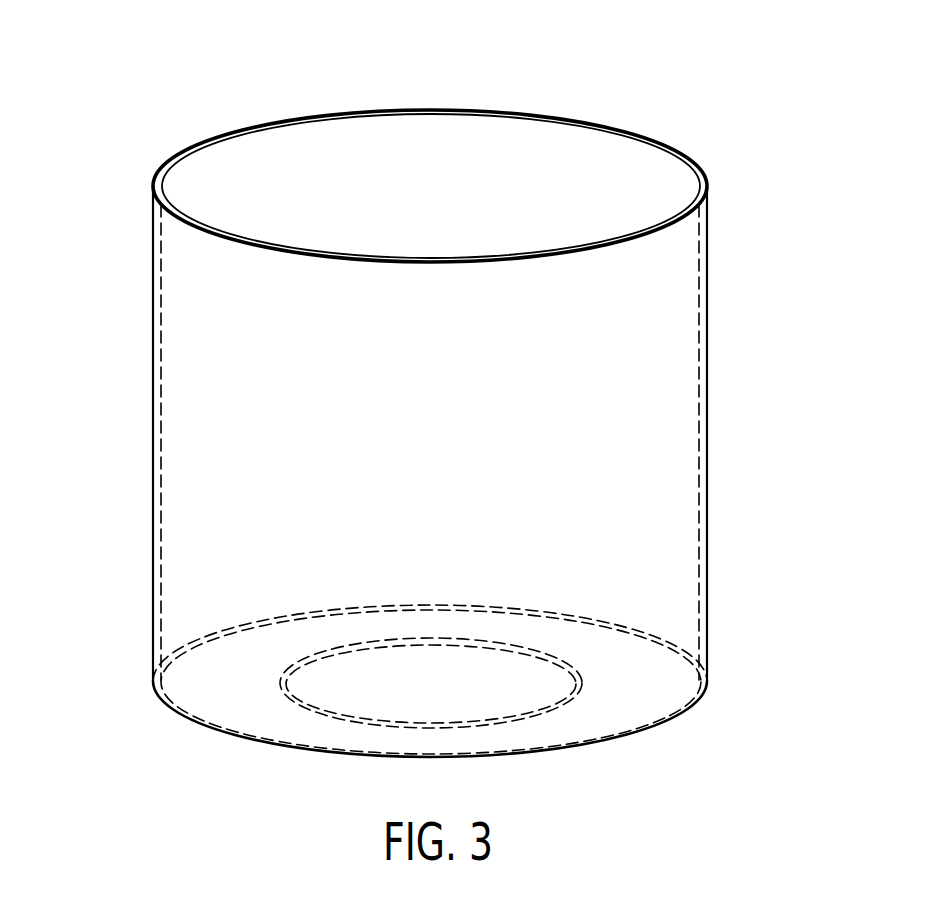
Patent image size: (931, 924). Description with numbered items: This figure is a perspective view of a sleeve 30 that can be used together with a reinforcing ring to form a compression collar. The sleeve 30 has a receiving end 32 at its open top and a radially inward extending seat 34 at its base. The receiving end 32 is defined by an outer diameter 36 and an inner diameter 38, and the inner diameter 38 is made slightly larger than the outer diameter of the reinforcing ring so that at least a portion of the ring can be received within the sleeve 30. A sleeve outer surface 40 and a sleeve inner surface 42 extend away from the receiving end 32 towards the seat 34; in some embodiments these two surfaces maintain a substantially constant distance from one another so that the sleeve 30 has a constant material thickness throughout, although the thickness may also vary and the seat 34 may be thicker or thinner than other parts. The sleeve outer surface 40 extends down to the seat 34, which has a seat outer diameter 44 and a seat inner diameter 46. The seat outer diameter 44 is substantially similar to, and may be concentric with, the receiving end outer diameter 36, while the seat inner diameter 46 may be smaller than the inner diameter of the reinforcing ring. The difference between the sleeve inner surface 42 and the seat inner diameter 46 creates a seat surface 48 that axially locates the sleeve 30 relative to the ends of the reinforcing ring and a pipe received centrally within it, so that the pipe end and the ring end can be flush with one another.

The sleeve 30 is at (254, 48).
The receiving end 32 is at (688, 157).
The seat 34 is at (578, 748).
The outer diameter 36 is at (206, 140).
The inner diameter 38 is at (578, 128).
The sleeve outer surface 40 is at (153, 435).
The sleeve inner surface 42 is at (421, 173).
The seat outer diameter 44 is at (222, 733).
The seat inner diameter 46 is at (337, 712).
The seat surface 48 is at (646, 691).